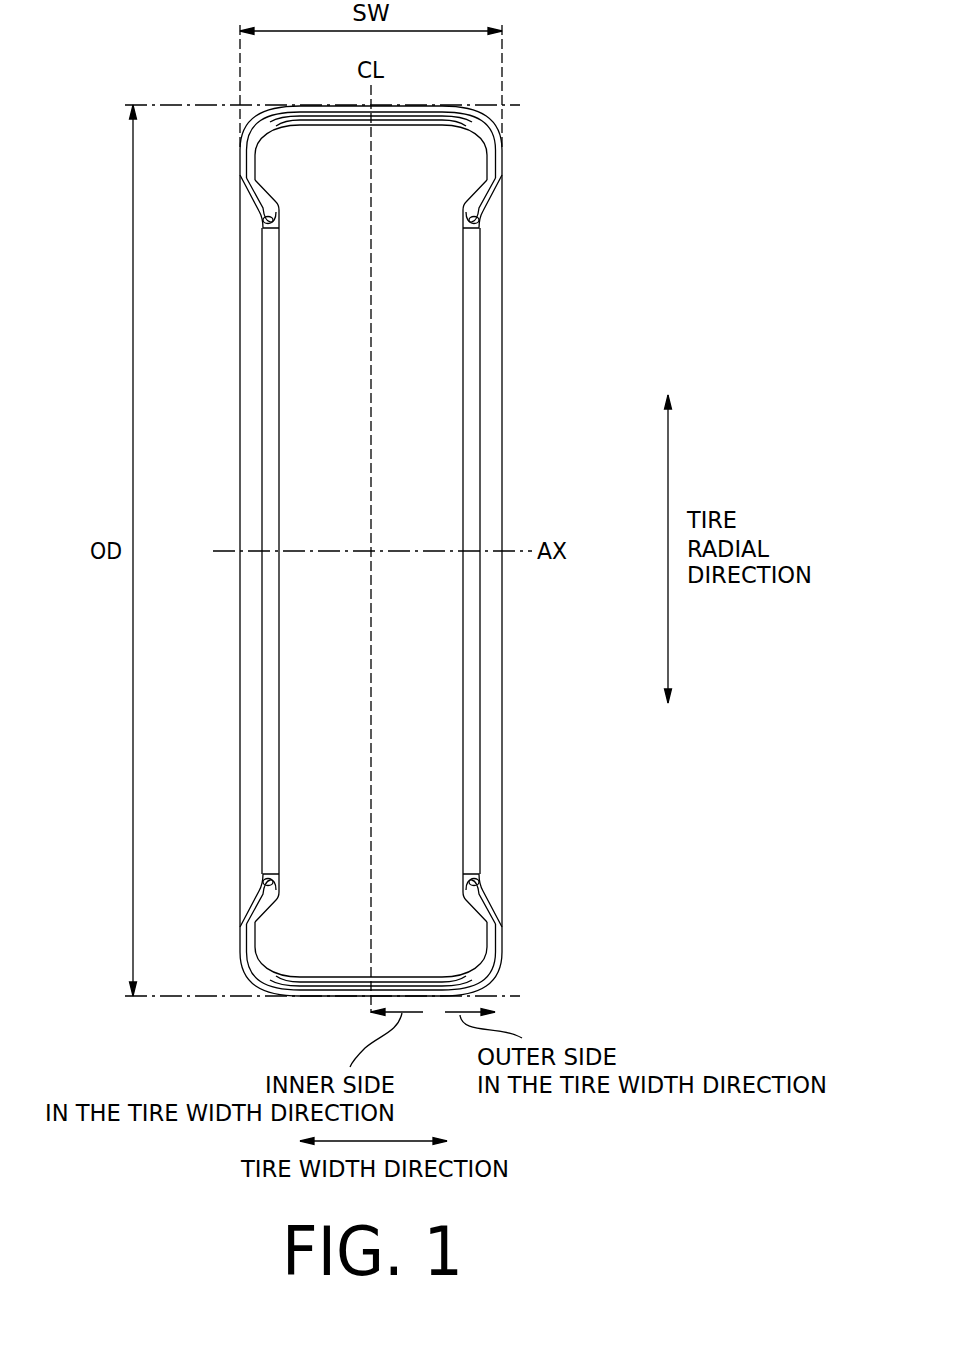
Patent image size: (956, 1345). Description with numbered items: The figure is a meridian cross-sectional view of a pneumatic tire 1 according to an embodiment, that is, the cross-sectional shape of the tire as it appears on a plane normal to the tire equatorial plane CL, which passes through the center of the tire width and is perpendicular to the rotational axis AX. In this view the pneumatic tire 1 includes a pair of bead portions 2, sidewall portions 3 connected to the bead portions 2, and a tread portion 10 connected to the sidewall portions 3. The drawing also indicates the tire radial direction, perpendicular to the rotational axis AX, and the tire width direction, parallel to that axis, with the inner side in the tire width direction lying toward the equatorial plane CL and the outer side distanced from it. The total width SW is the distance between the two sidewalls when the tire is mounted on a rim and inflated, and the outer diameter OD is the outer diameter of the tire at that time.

The pneumatic tire 1 is at (603, 125).
The bead portion 2 is at (258, 211).
The sidewall portion 3 is at (240, 161).
The tread portion 10 is at (402, 107).